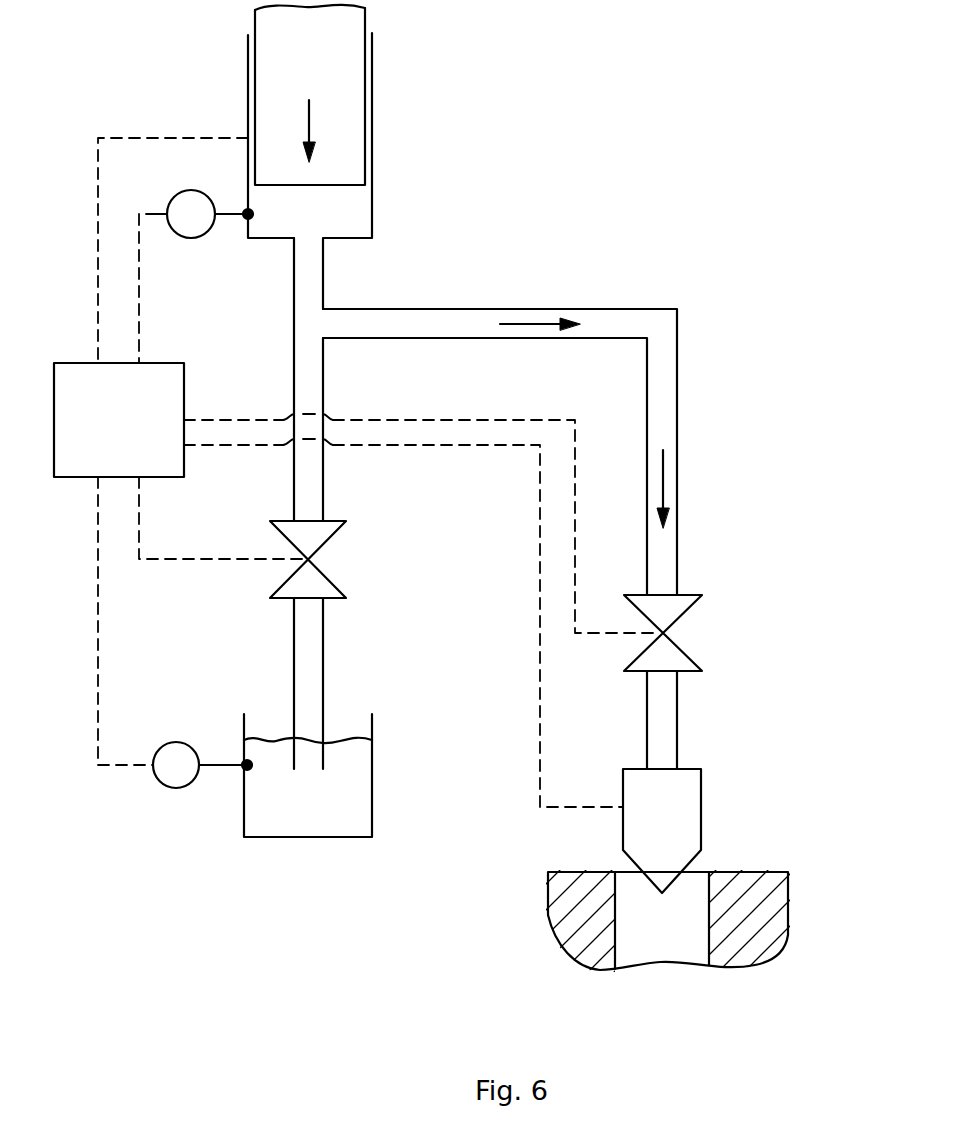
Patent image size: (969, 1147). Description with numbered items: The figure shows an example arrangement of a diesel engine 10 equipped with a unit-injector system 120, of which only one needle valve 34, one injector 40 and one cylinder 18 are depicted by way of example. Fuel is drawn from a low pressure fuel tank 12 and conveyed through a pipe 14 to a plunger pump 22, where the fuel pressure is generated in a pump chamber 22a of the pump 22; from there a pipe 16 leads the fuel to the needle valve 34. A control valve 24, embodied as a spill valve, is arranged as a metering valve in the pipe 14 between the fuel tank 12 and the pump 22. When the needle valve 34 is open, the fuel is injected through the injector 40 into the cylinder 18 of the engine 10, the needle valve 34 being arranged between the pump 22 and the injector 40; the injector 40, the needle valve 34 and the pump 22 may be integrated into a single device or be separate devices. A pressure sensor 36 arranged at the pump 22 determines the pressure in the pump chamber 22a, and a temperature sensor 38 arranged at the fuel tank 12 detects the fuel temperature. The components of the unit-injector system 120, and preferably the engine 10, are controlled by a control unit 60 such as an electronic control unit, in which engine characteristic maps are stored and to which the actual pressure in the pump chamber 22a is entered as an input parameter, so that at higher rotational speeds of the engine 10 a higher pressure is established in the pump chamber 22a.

The diesel engine 10 is at (775, 908).
The fuel tank 12 is at (308, 838).
The pipe 14 is at (293, 356).
The pipe 16 is at (509, 308).
The cylinder 18 is at (678, 942).
The plunger pump 22 is at (326, 73).
The pump chamber 22a is at (332, 222).
The control valve 24 is at (340, 571).
The needle valve 34 is at (690, 648).
The pressure sensor 36 is at (191, 238).
The temperature sensor 38 is at (176, 788).
The injector 40 is at (677, 835).
The control unit 60 is at (131, 426).
The unit-injector system 120 is at (750, 258).